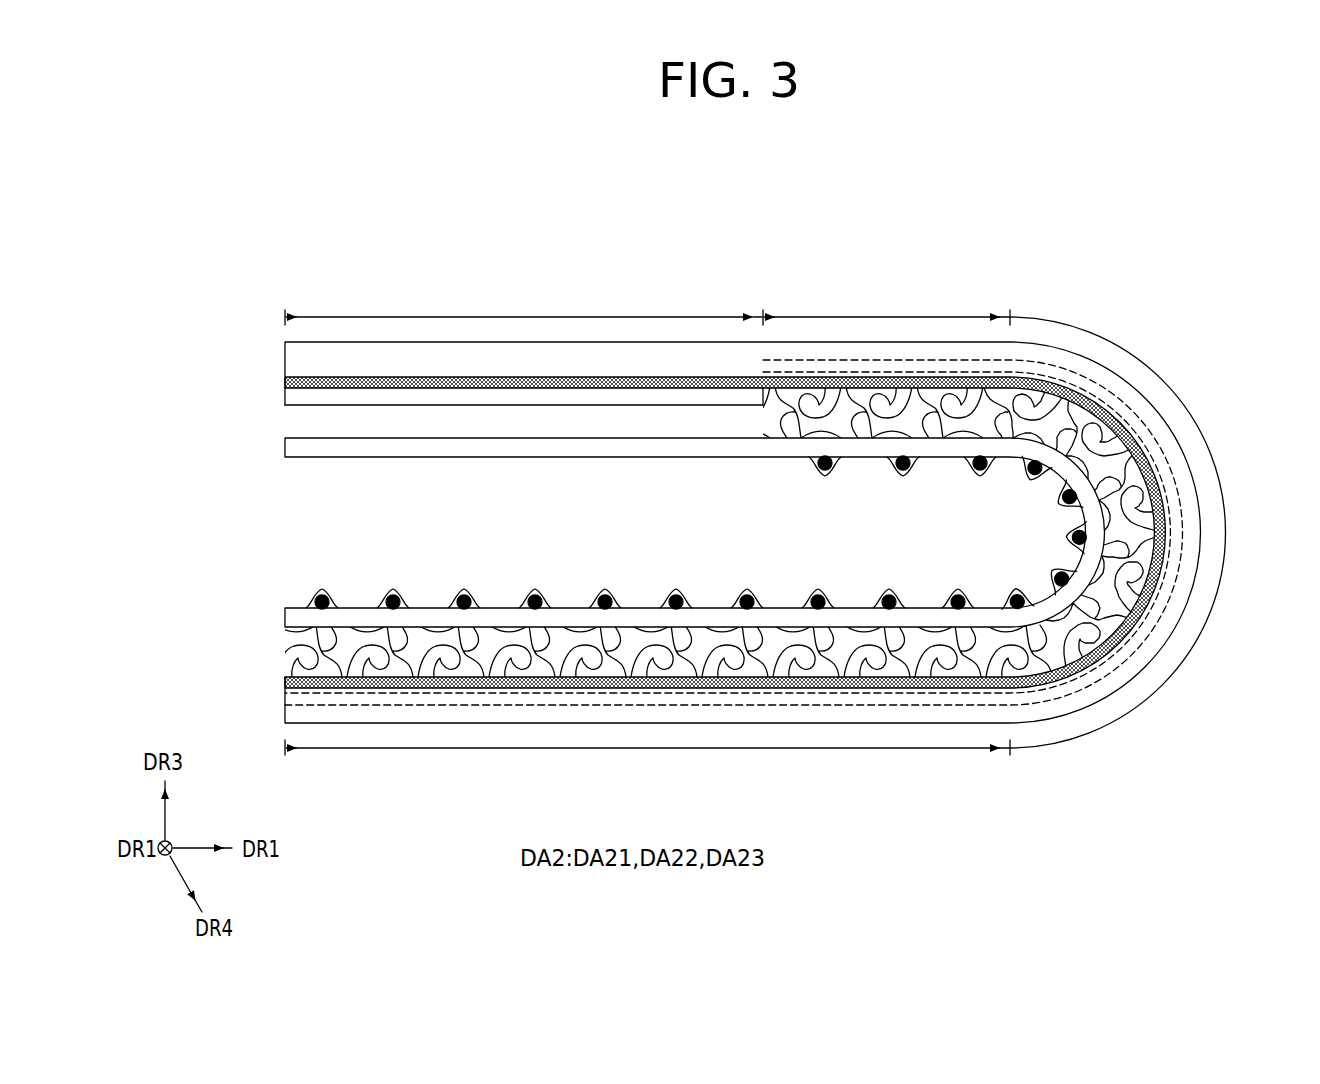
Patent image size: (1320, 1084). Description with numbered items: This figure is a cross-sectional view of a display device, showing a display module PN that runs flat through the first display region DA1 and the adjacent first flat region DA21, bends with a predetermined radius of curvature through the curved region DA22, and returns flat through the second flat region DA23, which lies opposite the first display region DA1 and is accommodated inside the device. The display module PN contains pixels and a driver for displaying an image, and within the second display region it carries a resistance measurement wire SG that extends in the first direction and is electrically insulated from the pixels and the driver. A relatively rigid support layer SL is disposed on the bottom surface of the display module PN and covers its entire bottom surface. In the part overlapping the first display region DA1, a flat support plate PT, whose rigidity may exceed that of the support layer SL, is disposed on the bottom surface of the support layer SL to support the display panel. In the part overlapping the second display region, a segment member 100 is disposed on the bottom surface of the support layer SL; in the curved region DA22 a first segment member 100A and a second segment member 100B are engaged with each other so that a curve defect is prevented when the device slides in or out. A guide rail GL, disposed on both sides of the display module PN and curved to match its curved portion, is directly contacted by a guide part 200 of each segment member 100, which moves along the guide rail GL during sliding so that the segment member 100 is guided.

The display module PN is at (290, 356).
The support layer SL is at (286, 383).
The support plate PT is at (292, 396).
The guide rail GL is at (290, 447).
The resistance measurement wire SG is at (1040, 363).
The segment member 100 is at (721, 594).
The first segment member 100A is at (1052, 652).
The second segment member 100B is at (1112, 652).
The guide part 200 is at (823, 470).
The first display region DA1 is at (524, 306).
The first flat region DA21 is at (887, 306).
The curved region DA22 is at (1227, 533).
The second flat region DA23 is at (647, 760).